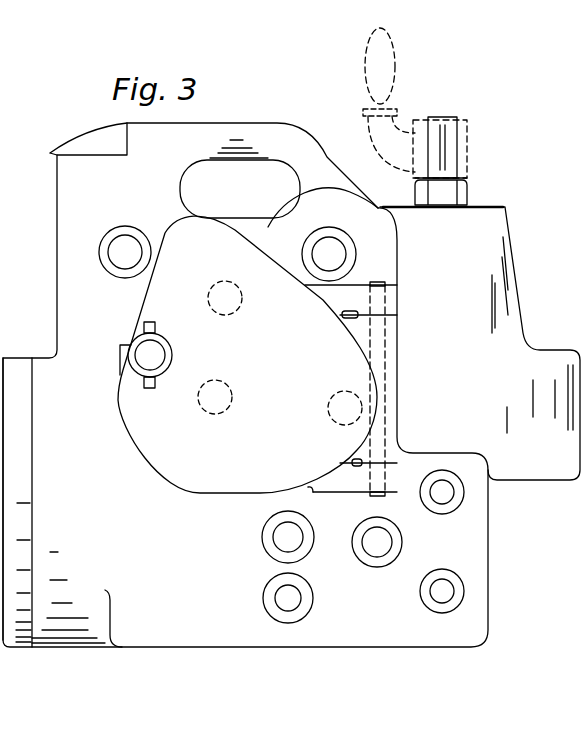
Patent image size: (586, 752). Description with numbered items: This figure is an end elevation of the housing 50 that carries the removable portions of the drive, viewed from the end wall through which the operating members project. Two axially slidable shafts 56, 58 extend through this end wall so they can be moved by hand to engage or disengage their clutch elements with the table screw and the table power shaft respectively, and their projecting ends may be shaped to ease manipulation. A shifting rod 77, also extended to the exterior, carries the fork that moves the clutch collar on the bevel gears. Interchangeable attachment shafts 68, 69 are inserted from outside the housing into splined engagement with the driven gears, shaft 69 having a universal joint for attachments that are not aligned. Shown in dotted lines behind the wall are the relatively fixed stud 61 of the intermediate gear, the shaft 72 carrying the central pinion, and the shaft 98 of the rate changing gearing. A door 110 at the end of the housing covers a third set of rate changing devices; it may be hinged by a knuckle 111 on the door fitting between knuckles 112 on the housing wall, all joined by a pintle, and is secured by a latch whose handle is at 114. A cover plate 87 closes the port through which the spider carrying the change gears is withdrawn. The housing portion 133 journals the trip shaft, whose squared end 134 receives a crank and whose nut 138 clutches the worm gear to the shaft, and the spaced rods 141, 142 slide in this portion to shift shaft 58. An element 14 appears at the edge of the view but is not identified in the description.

The frame 14 is at (6, 485).
The housing 50 is at (220, 632).
The shaft 56 is at (295, 533).
The shaft 58 is at (387, 541).
The stud 61 is at (335, 418).
The interchangeable shaft 68 is at (128, 246).
The interchangeable shaft 69 is at (336, 250).
The shaft 72 is at (236, 306).
The shifting rod 77 is at (295, 597).
The cover plate 87 is at (22, 518).
The shaft 98 is at (228, 389).
The door 110 is at (205, 478).
The knuckle 111 is at (388, 358).
The knuckles 112 is at (398, 311).
The handle 114 is at (160, 357).
The housing portion 133 is at (508, 272).
The squared end 134 is at (450, 119).
The nut 138 is at (466, 196).
The rod 141 is at (442, 492).
The rod 142 is at (442, 591).